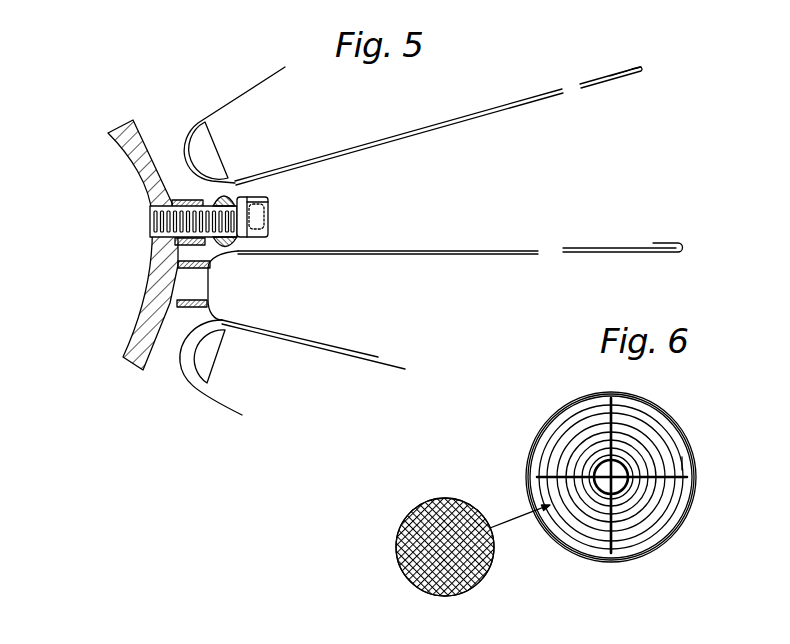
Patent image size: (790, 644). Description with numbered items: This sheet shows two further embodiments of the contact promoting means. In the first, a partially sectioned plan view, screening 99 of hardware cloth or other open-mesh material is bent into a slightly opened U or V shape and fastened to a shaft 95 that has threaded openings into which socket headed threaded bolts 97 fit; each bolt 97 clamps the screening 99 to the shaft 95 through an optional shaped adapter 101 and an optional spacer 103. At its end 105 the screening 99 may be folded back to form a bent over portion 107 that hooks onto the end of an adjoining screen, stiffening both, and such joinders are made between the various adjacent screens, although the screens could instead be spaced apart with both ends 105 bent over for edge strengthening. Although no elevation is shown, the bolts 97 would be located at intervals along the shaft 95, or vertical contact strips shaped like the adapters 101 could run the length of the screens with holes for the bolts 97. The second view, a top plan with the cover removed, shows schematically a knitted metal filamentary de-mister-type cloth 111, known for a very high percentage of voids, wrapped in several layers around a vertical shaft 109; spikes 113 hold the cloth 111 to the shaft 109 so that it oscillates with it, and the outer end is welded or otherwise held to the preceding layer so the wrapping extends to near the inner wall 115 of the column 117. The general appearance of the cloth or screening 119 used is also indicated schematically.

In FIG. 5, the shaft 95 is at (137, 128).
In FIG. 5, the socket headed threaded bolts 97 is at (258, 190).
In FIG. 5, the screening 99 is at (497, 113).
In FIG. 5, the shaped adapter 101 is at (258, 248).
In FIG. 5, the spacer 103 is at (190, 165).
In FIG. 5, the end 105 is at (644, 70).
In FIG. 5, the bent over portion 107 is at (628, 68).
In FIG. 6, the vertical shaft 109 is at (632, 463).
In FIG. 6, the knitted metal filamentary de-mister-type cloth 111 is at (630, 427).
In FIG. 6, the spikes 113 is at (675, 477).
In FIG. 6, the inner wall 115 is at (578, 401).
In FIG. 6, the column 117 is at (527, 459).
In FIG. 6, the cloth or screening 119 is at (420, 508).